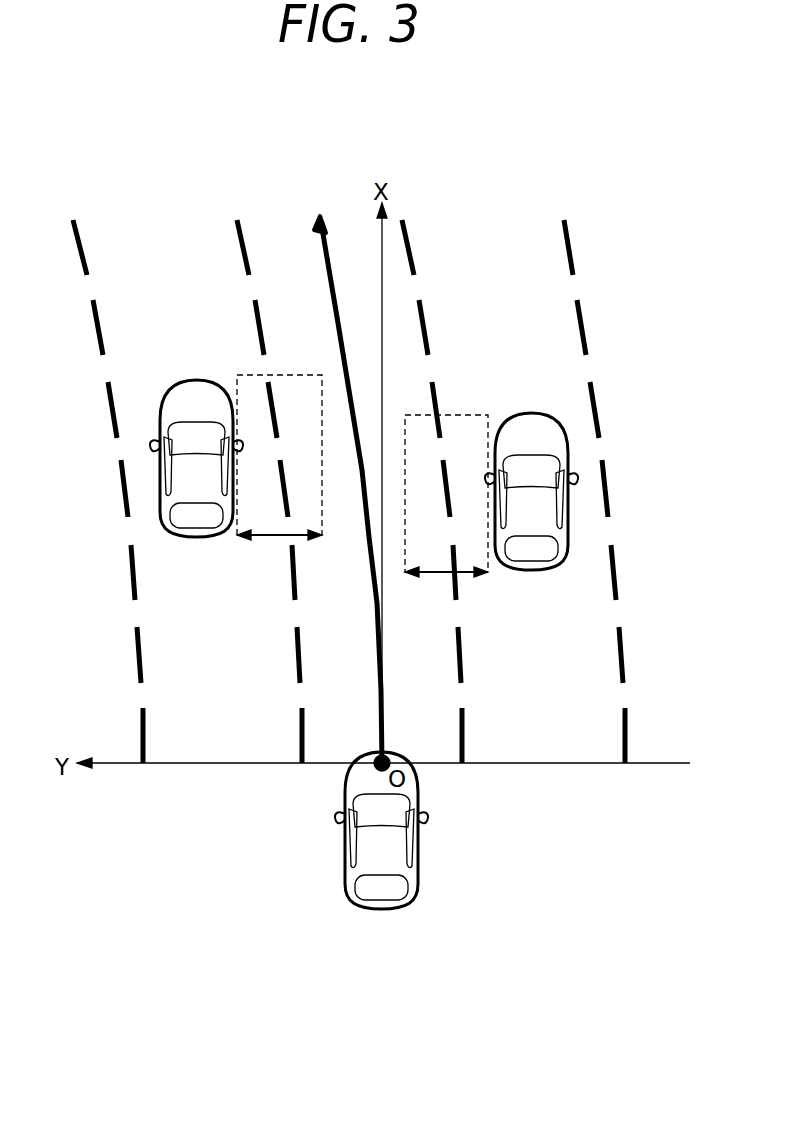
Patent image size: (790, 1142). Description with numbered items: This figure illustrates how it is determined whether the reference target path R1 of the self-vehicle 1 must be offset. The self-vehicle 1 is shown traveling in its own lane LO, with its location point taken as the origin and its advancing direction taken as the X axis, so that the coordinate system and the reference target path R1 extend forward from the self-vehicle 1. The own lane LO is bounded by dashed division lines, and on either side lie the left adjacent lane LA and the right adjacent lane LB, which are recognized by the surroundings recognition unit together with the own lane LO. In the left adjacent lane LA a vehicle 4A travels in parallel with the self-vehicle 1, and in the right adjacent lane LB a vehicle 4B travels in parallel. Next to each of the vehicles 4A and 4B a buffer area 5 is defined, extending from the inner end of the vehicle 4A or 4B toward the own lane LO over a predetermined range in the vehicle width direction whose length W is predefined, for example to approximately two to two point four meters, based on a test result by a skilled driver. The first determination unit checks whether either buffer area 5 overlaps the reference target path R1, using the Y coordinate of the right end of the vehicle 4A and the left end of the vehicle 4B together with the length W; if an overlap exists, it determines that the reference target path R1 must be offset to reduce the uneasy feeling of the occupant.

The self-vehicle 1 is at (388, 907).
The vehicle traveling in parallel on a left side 4A is at (193, 380).
The vehicle traveling in parallel on a right side 4B is at (532, 413).
The buffer area 5 is at (292, 375).
The reference target path R1 is at (338, 323).
The left adjacent lane LA is at (170, 247).
The own lane LO is at (282, 245).
The right adjacent lane LB is at (497, 228).
The length of the predetermined range in the vehicle width direction W is at (362, 568).